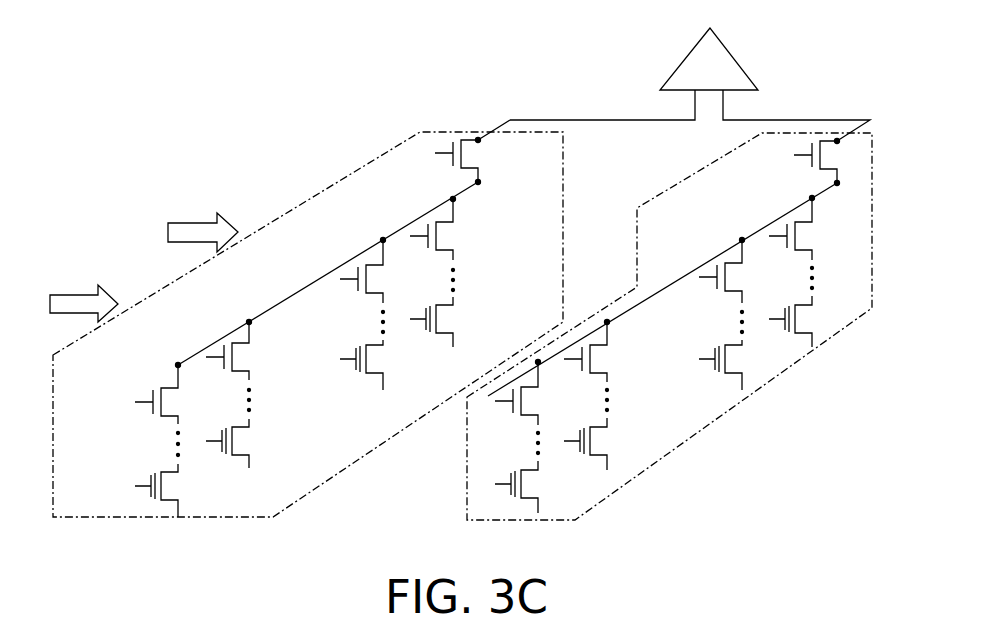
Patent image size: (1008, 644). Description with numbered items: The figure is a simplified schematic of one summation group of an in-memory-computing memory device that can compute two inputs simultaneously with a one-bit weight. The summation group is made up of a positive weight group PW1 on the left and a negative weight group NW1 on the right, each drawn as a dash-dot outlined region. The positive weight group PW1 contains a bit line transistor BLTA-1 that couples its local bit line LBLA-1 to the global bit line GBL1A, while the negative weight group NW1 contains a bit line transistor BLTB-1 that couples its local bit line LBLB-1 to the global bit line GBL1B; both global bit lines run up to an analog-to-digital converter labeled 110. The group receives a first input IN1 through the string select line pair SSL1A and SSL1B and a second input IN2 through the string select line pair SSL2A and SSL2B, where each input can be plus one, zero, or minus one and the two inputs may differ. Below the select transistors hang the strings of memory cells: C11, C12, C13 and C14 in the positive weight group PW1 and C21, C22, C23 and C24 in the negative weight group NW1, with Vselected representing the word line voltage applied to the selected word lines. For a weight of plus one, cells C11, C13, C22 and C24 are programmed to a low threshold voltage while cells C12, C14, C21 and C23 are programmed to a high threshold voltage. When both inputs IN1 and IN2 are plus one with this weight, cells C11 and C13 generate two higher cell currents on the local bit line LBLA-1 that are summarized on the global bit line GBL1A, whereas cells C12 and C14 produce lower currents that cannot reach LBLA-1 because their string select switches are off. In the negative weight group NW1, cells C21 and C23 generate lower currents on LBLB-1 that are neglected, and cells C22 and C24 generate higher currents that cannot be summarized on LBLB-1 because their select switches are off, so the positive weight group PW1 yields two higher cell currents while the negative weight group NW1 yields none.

The analog-to-digital converter (ADC) 110 is at (690, 57).
The global bit line GBL1A is at (602, 106).
The global bit line GBL1B is at (796, 115).
The positive weight group PW1 is at (345, 468).
The negative weight group NW1 is at (660, 467).
The input IN1 is at (84, 293).
The input IN2 is at (203, 222).
The bit line transistor BLTA-1 is at (488, 152).
The bit line transistor BLTB-1 is at (783, 162).
The local bit line LBLA-1 is at (443, 203).
The local bit line LBLB-1 is at (780, 218).
The string select line SSL1A is at (119, 394).
The string select line SSL1B is at (182, 350).
The string select line SSL2A is at (323, 271).
The string select line SSL2B is at (386, 229).
The memory cell C11 is at (144, 475).
The memory cell C12 is at (243, 429).
The memory cell C13 is at (376, 351).
The memory cell C14 is at (447, 308).
The memory cell C21 is at (533, 437).
The memory cell C22 is at (601, 395).
The memory cell C23 is at (736, 314).
The memory cell C24 is at (806, 272).
The word line voltage Vselected is at (497, 227).